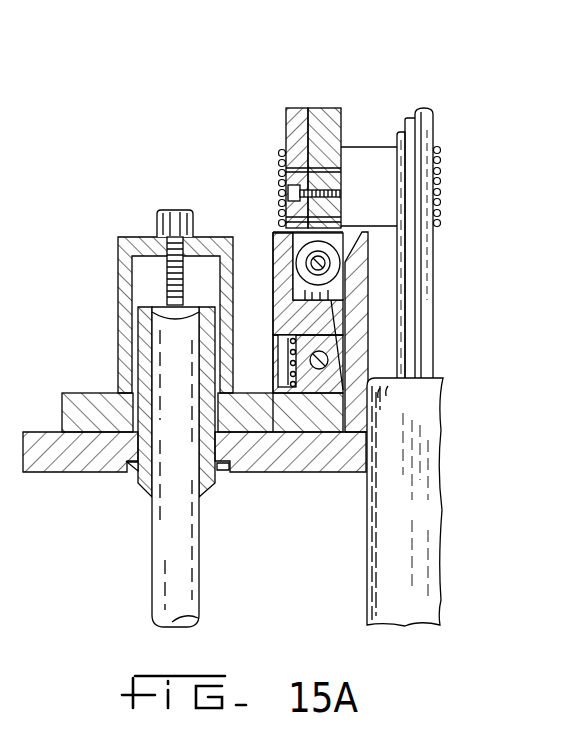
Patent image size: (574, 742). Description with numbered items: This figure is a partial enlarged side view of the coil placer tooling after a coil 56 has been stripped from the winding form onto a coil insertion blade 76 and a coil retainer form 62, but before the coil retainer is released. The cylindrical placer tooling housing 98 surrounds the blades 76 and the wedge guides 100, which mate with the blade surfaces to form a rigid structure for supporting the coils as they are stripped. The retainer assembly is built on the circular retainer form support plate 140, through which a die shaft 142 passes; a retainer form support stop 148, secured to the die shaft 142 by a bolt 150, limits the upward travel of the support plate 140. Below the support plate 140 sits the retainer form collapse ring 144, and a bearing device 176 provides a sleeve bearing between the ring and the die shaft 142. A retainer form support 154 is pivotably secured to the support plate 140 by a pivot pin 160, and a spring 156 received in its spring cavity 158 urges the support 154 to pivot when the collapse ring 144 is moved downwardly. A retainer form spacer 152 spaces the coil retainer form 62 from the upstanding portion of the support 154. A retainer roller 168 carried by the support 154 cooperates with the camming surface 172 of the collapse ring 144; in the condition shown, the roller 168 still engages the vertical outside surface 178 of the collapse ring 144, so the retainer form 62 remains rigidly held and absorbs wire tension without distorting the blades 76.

The coil 56 is at (439, 168).
The coil retainer form 62 is at (296, 112).
The coil insertion blade 76 is at (427, 116).
The placer tooling housing 98 is at (425, 487).
The wedge guide 100 is at (407, 250).
The retainer form support plate 140 is at (85, 405).
The die shaft 142 is at (172, 561).
The retainer form collapse ring 144 is at (297, 458).
The retainer form support stop 148 is at (130, 243).
The bolt 150 is at (171, 216).
The retainer form spacer 152 is at (318, 108).
The retainer form support 154 is at (273, 233).
The spring 156 is at (295, 372).
The spring cavity 158 is at (288, 336).
The pivot pin 160 is at (334, 357).
The retainer roller 168 is at (324, 243).
The camming surface 172 is at (398, 248).
The bearing device 176 is at (145, 475).
The vertical outside surface 178 is at (292, 292).